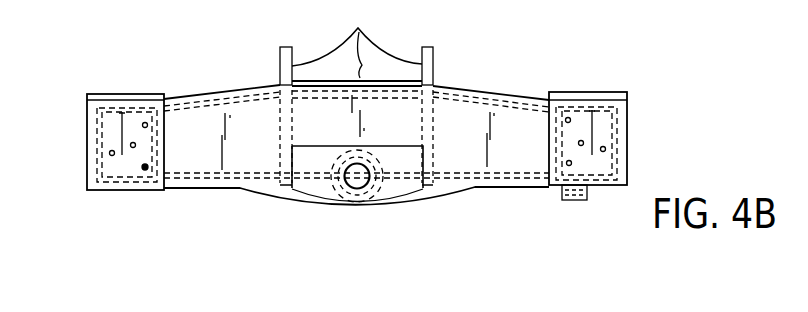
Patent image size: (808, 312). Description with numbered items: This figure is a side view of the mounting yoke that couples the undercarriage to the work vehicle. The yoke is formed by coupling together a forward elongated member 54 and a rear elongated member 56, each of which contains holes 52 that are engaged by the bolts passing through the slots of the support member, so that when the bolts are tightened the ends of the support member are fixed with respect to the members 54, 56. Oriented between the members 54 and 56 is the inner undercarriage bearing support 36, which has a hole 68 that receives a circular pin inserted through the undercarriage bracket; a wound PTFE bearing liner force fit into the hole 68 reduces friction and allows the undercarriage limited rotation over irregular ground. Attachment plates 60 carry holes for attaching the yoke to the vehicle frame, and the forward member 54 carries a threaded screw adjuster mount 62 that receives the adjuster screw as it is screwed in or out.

The inner undercarriage bearing support 36 is at (318, 184).
The holes 52 is at (145, 167).
The forward elongated member 54 is at (627, 103).
The rear elongated member 56 is at (87, 125).
The attachment plates 60 is at (357, 41).
The threaded screw adjuster mount 62 is at (588, 192).
The hole 68 is at (366, 179).